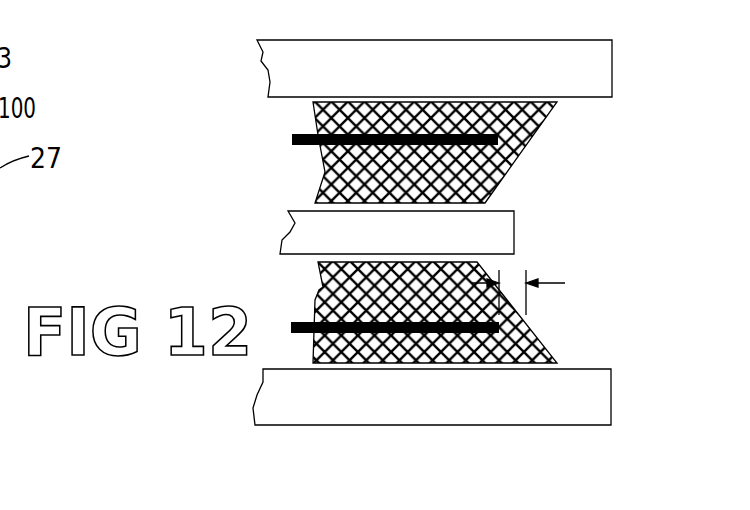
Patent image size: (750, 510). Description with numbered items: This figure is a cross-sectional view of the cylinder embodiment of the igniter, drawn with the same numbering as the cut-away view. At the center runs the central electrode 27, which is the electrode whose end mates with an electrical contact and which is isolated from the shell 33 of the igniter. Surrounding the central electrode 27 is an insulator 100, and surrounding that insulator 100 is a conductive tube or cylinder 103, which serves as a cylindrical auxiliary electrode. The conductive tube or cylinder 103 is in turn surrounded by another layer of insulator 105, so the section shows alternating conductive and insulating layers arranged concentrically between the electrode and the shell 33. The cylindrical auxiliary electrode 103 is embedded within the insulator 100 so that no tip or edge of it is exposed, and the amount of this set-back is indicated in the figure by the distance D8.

The central electrode 27 is at (484, 244).
The shell 33 is at (546, 415).
The insulator 100 is at (598, 262).
The conductive tube or cylinder 103 is at (532, 328).
The layer of insulator 105 is at (635, 328).
The distance D8 is at (550, 283).